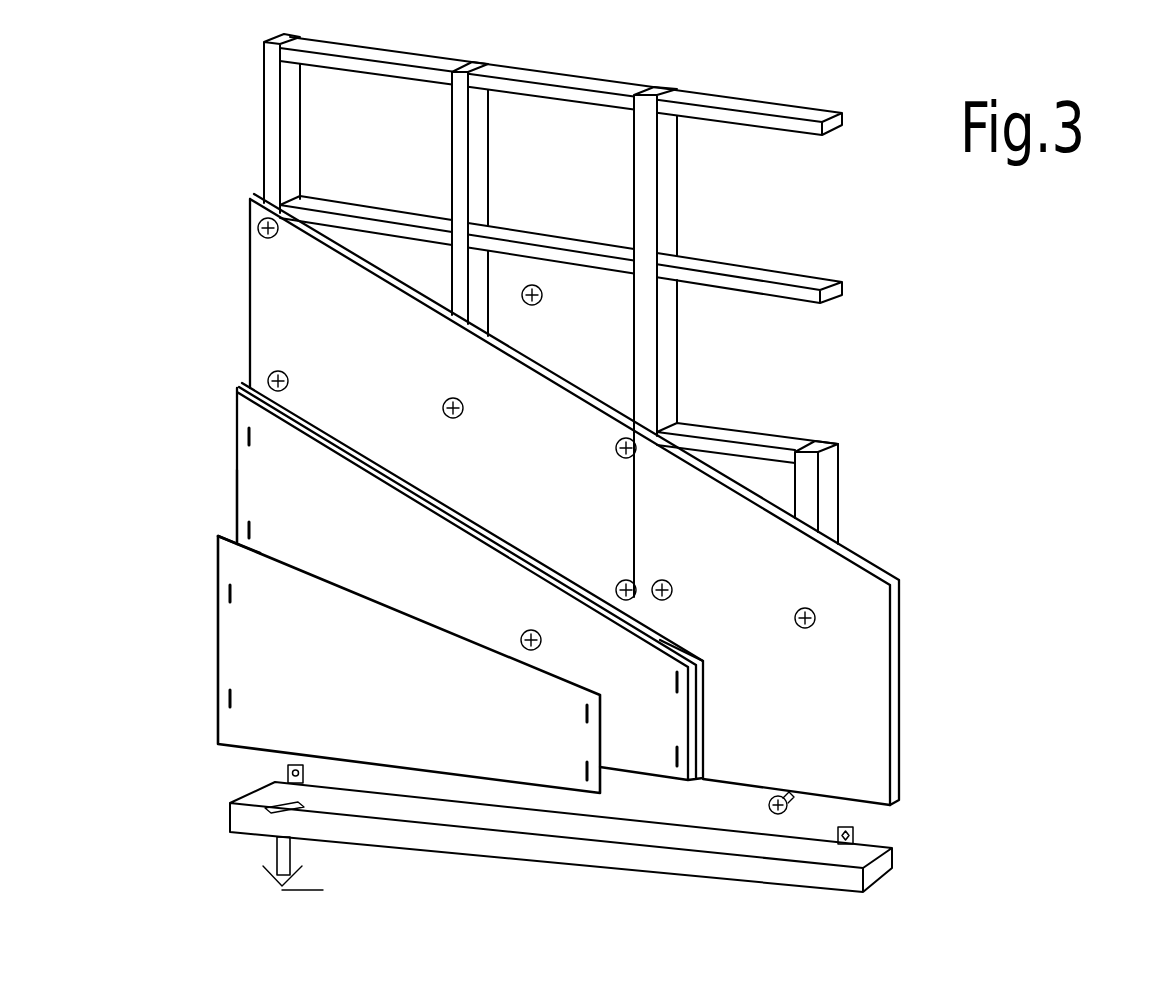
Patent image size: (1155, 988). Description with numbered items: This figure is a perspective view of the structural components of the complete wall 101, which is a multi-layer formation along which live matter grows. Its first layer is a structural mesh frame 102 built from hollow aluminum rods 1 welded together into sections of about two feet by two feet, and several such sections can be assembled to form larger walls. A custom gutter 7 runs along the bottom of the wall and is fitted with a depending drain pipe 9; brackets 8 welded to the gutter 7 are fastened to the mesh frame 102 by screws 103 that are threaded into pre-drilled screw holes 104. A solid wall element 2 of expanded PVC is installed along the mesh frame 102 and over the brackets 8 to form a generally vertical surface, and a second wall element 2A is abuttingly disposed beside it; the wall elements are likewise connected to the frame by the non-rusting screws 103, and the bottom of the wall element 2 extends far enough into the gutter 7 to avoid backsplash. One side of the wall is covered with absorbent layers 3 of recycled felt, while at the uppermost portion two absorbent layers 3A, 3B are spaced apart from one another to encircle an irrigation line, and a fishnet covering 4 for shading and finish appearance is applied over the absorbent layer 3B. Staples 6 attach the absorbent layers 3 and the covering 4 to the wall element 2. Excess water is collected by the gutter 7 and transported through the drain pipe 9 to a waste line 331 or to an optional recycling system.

The rods 1 is at (853, 268).
The structural mesh frame 102 is at (501, 226).
The screws 103 is at (486, 394).
The solid wall element 2 is at (746, 601).
The wall element 2A is at (565, 520).
The pre-drilled screw holes 104 is at (803, 780).
The absorbent layers 3 is at (693, 727).
The absorbent layer 3A is at (700, 673).
The absorbent layer 3B is at (652, 725).
The staples 6 is at (274, 532).
The fishnet covering 4 is at (419, 720).
The wall 101 is at (218, 532).
The gutter 7 is at (912, 872).
The brackets 8 is at (871, 840).
The drain pipe 9 is at (247, 862).
The waste line 331 is at (308, 885).